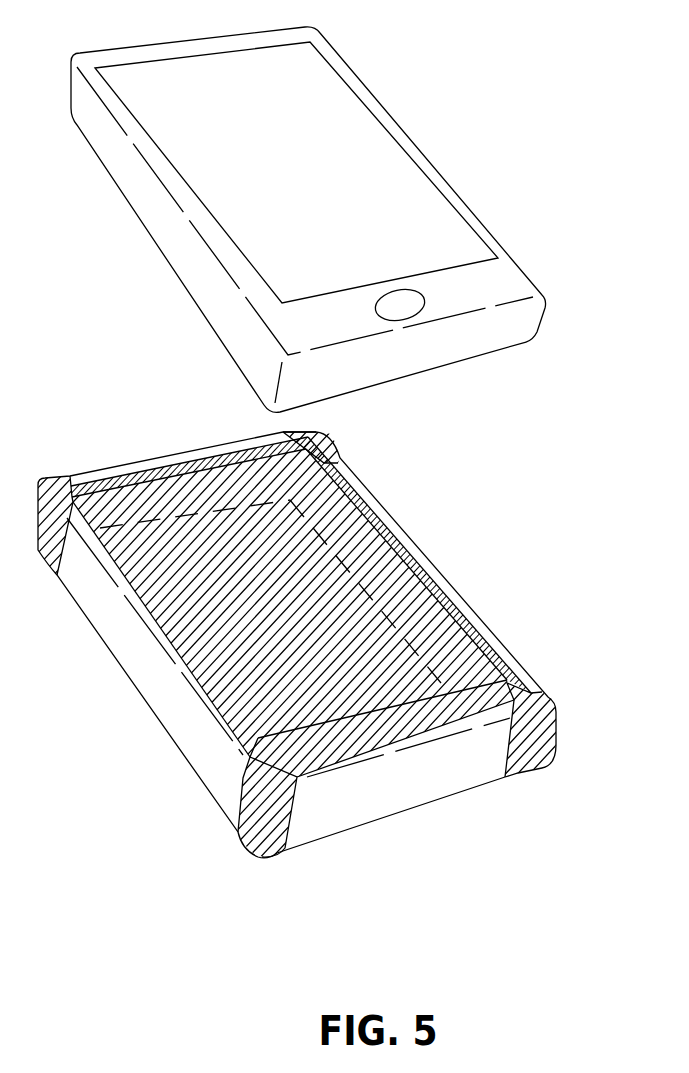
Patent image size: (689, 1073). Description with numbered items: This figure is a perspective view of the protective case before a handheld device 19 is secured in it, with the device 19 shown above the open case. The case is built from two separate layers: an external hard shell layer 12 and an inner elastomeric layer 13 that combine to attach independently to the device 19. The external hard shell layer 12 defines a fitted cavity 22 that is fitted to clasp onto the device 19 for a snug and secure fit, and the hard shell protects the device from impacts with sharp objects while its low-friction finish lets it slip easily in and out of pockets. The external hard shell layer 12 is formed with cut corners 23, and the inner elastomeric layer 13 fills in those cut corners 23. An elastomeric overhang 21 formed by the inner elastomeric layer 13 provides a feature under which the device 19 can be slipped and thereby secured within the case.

The handheld device 19 is at (387, 205).
The external hard shell layer 12 is at (133, 641).
The inner elastomeric layer 13 is at (174, 498).
The fitted cavity 22 is at (356, 648).
The large elastomeric overhang 21 is at (503, 687).
The cut corners 23 is at (537, 740).